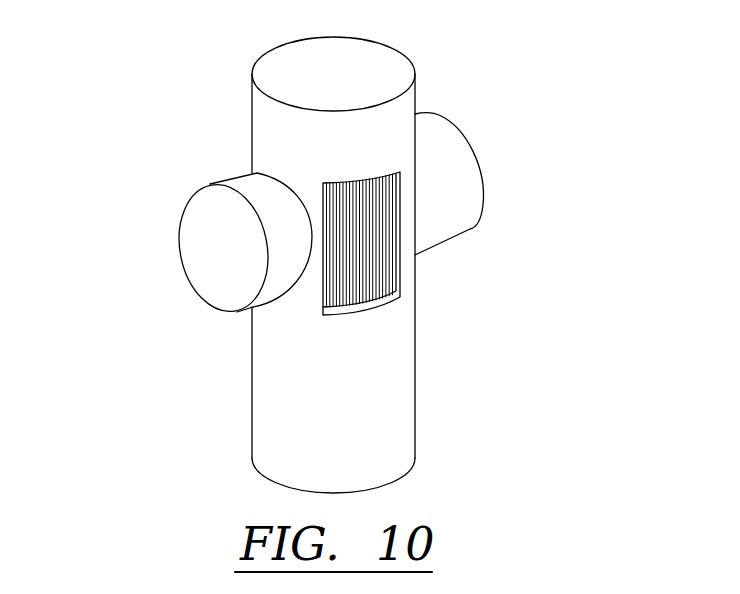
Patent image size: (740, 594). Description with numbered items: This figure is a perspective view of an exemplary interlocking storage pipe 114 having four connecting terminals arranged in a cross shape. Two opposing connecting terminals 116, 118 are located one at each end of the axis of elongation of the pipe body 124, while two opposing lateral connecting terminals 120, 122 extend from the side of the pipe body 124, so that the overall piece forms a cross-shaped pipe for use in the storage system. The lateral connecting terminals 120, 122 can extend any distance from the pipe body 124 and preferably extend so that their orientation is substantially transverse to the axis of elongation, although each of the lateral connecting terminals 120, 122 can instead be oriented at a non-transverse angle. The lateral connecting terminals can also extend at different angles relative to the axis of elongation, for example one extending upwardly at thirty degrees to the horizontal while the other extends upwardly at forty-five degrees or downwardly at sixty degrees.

The interlocking pipe 114 is at (546, 163).
The connecting terminal 116 is at (290, 83).
The connecting terminal 118 is at (378, 489).
The lateral connecting terminal 120 is at (213, 260).
The lateral connecting terminal 122 is at (458, 222).
The pipe body 124 is at (390, 363).